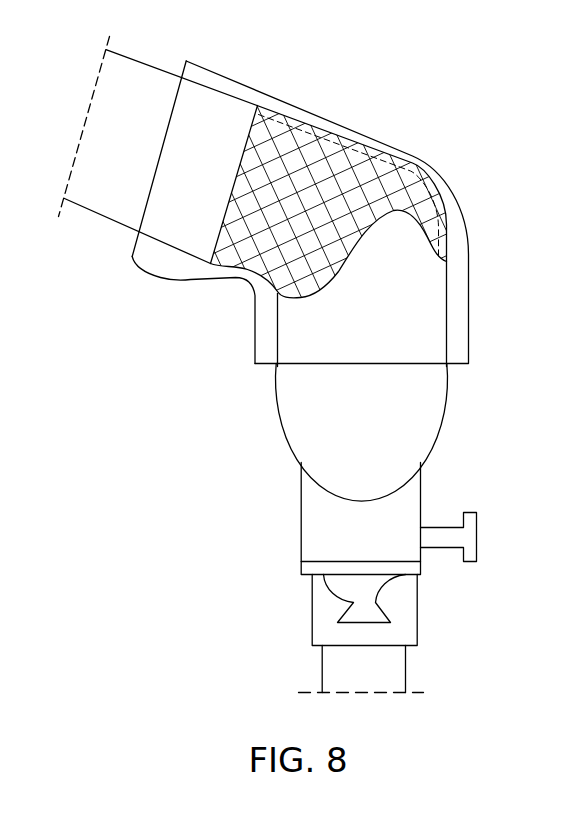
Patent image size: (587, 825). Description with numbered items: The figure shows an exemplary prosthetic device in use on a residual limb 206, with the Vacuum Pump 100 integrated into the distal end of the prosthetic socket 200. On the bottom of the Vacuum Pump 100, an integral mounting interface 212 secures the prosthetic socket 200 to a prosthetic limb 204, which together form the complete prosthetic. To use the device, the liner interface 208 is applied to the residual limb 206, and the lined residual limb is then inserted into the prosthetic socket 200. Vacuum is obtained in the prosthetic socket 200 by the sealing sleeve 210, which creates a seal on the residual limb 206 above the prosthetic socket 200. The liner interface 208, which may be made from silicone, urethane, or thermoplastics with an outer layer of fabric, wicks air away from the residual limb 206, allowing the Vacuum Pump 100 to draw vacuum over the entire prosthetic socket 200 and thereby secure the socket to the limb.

The prosthetic vacuum pump 100 is at (300, 518).
The prosthetic socket 200 is at (447, 403).
The prosthetic limb 204 is at (405, 660).
The residual limb 206 is at (222, 93).
The liner interface 208 is at (345, 160).
The sealing sleeve 210 is at (155, 277).
The mounting interface 212 is at (332, 585).